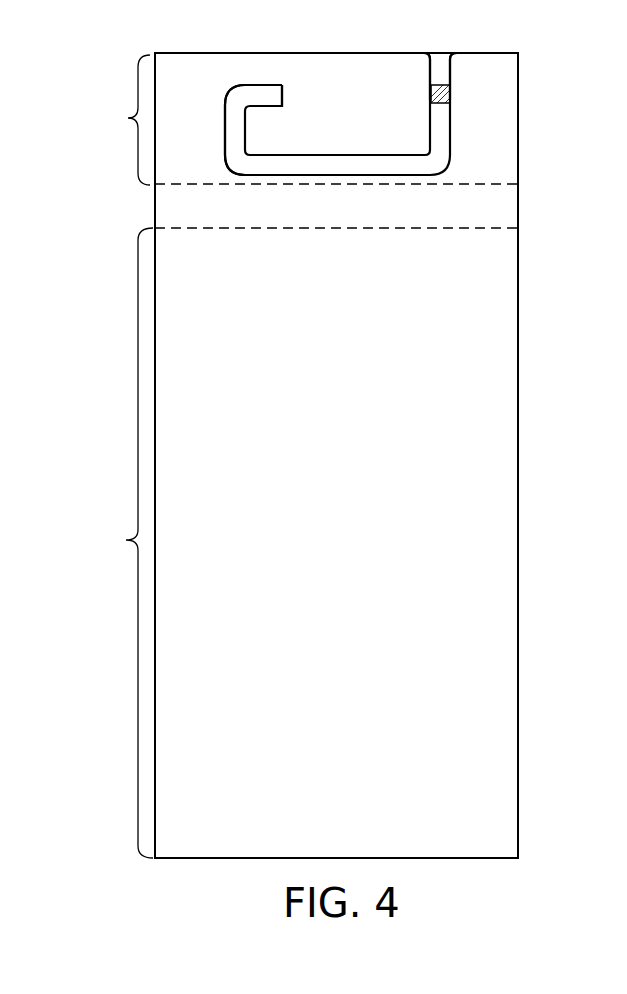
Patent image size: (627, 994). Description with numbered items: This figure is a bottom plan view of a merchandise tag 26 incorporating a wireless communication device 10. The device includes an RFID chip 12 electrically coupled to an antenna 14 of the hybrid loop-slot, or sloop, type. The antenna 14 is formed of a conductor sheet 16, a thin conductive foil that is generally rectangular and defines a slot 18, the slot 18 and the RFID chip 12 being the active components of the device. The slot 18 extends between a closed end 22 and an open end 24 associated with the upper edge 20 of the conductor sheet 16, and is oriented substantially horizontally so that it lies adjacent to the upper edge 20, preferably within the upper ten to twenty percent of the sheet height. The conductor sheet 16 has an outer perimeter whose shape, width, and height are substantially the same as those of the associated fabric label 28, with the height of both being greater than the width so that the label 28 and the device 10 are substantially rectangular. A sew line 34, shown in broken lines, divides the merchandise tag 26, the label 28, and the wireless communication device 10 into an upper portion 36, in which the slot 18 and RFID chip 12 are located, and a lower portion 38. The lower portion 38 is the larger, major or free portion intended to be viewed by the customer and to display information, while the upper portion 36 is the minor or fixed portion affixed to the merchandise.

The wireless communication device 10 is at (338, 50).
The RFID chip 12 is at (432, 95).
The antenna 14 is at (524, 600).
The conductor sheet 16 is at (497, 797).
The slot 18 is at (452, 136).
The upper edge 20 is at (518, 53).
The closed end 22 is at (265, 85).
The open end 24 is at (441, 50).
The merchandise tag 26 is at (171, 871).
The fabric label 28 is at (228, 133).
The sew line 34 is at (500, 215).
The upper portion 36 is at (116, 120).
The lower portion 38 is at (117, 543).